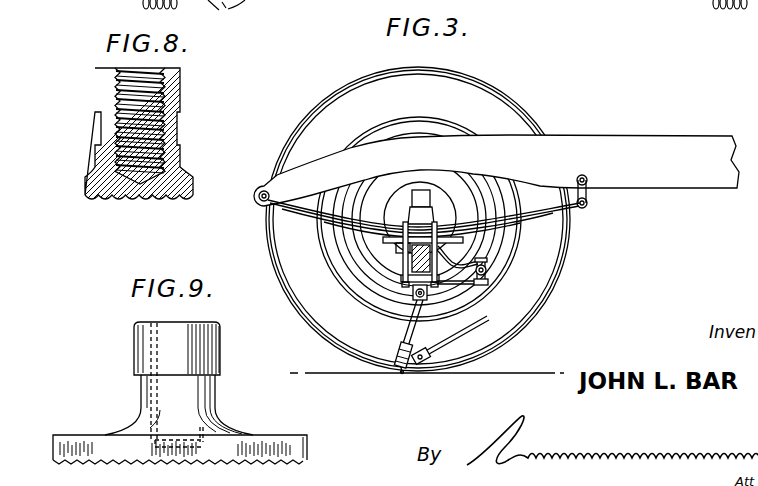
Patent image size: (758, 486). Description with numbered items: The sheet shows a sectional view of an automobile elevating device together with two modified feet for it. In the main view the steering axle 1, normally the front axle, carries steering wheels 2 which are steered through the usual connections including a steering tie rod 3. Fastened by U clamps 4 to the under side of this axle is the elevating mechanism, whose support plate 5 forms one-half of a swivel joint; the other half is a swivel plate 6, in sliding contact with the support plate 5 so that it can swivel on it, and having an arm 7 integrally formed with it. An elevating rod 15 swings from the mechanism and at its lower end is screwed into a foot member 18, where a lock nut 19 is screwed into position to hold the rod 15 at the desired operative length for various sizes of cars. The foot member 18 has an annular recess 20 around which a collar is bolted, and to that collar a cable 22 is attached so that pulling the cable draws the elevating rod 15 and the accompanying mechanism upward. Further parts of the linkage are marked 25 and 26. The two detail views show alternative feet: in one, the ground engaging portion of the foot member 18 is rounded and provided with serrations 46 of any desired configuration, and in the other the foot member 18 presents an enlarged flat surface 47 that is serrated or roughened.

In FIG. 3, the steering axle 1 is at (403, 262).
In FIG. 3, the steering wheels 2 is at (501, 100).
In FIG. 3, the steering tie rod 3 is at (490, 270).
In FIG. 3, the U clamps 4 is at (446, 254).
In FIG. 3, the support plate 5 is at (403, 277).
In FIG. 3, the swivel plate 6 is at (410, 292).
In FIG. 3, the arm 7 is at (463, 340).
In FIG. 3, the elevating rod 15 is at (406, 332).
In FIG. 8, the foot member 18 is at (96, 83).
In FIG. 9, the foot member 18 is at (135, 348).
In FIG. 3, the foot member 18 is at (402, 373).
In FIG. 3, the lock nut 19 is at (414, 353).
In FIG. 8, the annular recess 20 is at (178, 123).
In FIG. 9, the annular recess 20 is at (143, 392).
In FIG. 3, the cable 22 is at (470, 333).
In FIG. 3, the rod 25 is at (489, 284).
In FIG. 3, the link 26 is at (490, 257).
In FIG. 8, the serrations 46 is at (137, 203).
In FIG. 9, the enlarged flat surface 47 is at (307, 450).